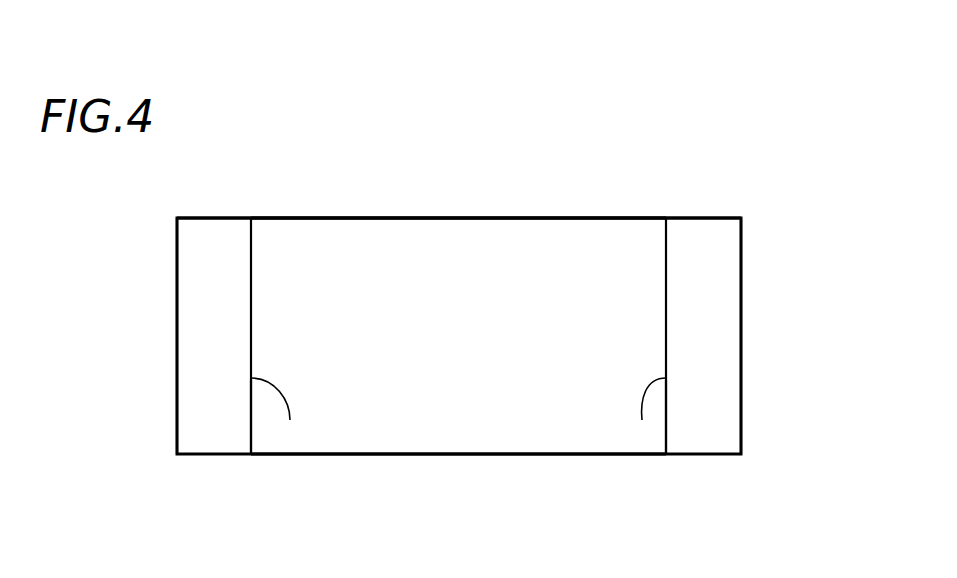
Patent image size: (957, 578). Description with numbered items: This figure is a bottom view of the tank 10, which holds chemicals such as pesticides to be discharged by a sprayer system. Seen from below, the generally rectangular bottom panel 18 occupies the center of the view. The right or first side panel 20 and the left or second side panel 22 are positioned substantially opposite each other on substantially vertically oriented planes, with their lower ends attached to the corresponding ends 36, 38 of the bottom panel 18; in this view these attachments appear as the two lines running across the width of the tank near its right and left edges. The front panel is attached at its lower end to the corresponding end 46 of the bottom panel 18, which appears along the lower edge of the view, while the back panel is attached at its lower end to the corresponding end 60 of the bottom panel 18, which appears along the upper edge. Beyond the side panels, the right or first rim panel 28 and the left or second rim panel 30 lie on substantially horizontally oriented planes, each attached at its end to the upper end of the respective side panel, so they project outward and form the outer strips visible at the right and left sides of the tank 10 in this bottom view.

The tank 10 is at (126, 229).
The bottom panel 18 is at (580, 191).
The end of the bottom panel 60 is at (389, 218).
The end of the bottom panel 46 is at (495, 455).
The second rim panel 30 is at (216, 358).
The first rim panel 28 is at (703, 343).
The second side panel 22 is at (245, 398).
The end of the bottom panel 38 is at (290, 420).
The end of the bottom panel 36 is at (642, 420).
The first side panel 20 is at (673, 415).